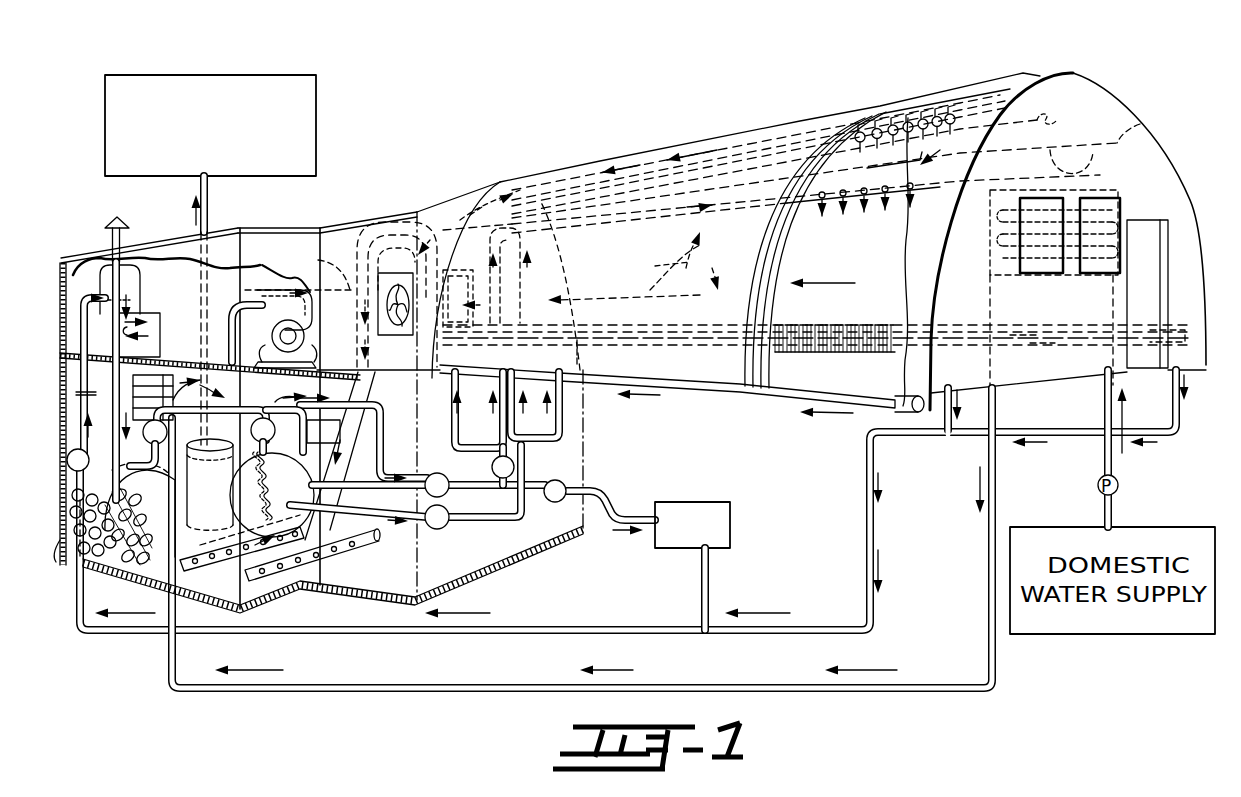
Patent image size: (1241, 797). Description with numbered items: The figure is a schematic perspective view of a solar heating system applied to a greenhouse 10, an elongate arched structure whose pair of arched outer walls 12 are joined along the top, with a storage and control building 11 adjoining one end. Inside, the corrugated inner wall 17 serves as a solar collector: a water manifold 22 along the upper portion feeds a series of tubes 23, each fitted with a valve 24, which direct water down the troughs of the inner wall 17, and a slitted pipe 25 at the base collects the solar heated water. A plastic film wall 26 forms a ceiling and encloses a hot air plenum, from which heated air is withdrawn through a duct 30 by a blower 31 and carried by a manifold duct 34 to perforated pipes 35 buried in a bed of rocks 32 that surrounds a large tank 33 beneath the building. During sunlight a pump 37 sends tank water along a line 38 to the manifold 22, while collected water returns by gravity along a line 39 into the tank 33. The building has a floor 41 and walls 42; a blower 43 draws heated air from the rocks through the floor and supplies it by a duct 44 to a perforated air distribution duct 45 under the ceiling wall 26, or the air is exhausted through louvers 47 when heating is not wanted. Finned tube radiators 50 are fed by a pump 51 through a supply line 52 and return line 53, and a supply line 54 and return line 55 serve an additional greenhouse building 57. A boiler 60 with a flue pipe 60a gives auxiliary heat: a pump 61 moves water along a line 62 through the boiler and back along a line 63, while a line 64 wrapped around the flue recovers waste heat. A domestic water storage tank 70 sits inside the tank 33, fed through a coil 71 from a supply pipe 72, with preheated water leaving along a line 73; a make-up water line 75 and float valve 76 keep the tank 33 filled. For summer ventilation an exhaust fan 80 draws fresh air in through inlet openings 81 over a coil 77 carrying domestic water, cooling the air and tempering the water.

The greenhouse 10 is at (1067, 66).
The storage and control building 11 is at (340, 208).
The arched outer walls 12 is at (606, 259).
The inner wall 17 is at (772, 304).
The water manifold 22 is at (1060, 121).
The tubes 23 is at (913, 118).
The valves 24 is at (922, 138).
The pipe 25 is at (773, 394).
The wall 26 is at (1140, 124).
The duct 30 is at (463, 198).
The blower 31 is at (395, 217).
The bed of rocks 32 is at (70, 568).
The tank 33 is at (272, 494).
The manifold duct 34 is at (335, 562).
The perforated pipes 35 is at (268, 594).
The pump 37 is at (445, 532).
The line 38 is at (525, 447).
The line 39 is at (410, 406).
The floor 41 is at (186, 358).
The walls 42 is at (62, 398).
The blower 43 is at (252, 324).
The duct 44 is at (318, 260).
The perforated air distribution duct 45 is at (873, 202).
The louvers 47 is at (133, 390).
The finned tube radiators 50 is at (840, 347).
The pump 51 is at (446, 476).
The supply line 52 is at (480, 492).
The return line 53 is at (700, 624).
The supply line 54 is at (618, 514).
The return line 55 is at (712, 570).
The additional greenhouse building 57 is at (755, 502).
The boiler 60 is at (138, 335).
The flue pipe 60a is at (107, 231).
The pump 61 is at (98, 486).
The line 62 is at (64, 436).
The line 63 is at (130, 300).
The line 64 is at (80, 332).
The domestic water storage tank 70 is at (220, 338).
The coil 71 is at (245, 490).
The supply pipe 72 is at (436, 687).
The line 73 is at (212, 206).
The make-up water line 75 is at (234, 406).
The float valve 76 is at (140, 510).
The coil 77 is at (1003, 264).
The exhaust fan 80 is at (395, 320).
The fresh air inlet openings 81 is at (1115, 212).